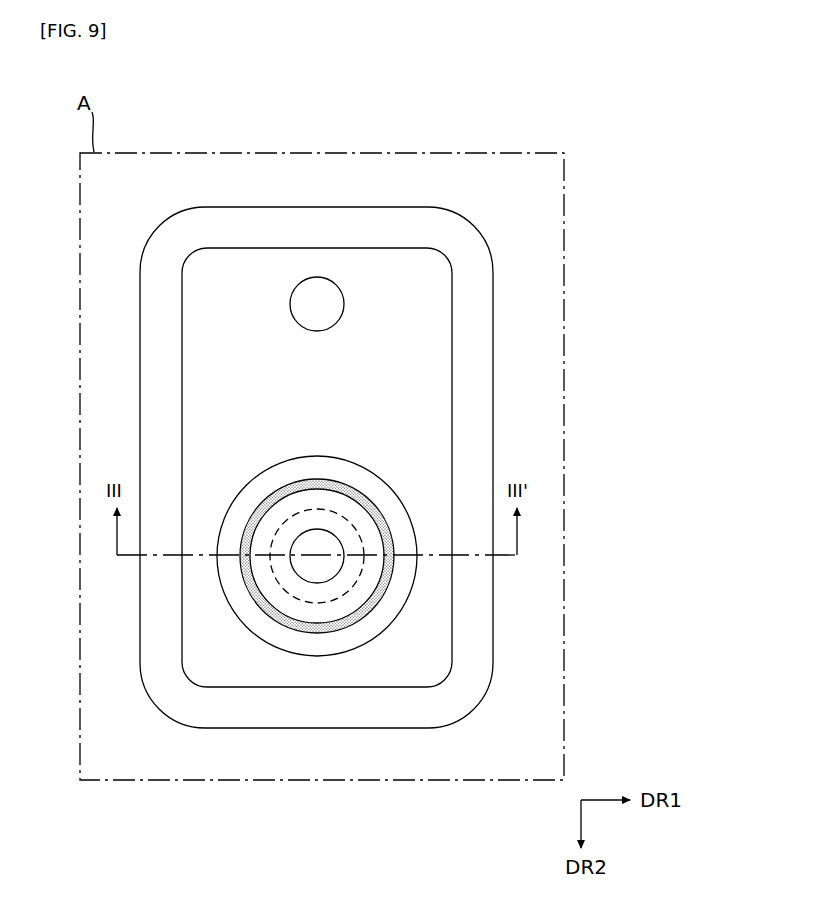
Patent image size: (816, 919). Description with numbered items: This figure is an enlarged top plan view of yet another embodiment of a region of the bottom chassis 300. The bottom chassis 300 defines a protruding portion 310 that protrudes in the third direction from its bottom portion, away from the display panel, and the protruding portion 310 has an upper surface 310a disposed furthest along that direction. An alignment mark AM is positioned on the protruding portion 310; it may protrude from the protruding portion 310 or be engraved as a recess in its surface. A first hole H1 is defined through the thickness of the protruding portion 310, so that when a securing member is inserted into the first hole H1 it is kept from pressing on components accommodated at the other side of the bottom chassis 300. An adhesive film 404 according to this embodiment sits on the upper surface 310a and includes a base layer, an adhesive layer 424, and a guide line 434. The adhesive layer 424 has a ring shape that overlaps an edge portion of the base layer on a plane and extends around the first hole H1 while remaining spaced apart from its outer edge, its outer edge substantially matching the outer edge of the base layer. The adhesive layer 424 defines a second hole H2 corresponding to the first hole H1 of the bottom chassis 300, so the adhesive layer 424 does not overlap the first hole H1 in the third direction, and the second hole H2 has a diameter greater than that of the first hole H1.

The bottom chassis 300 is at (540, 185).
The protruding portion 310 is at (493, 283).
The upper surface 310a is at (452, 341).
The alignment mark AM is at (315, 277).
The adhesive film 404 is at (347, 653).
The guide line 434 is at (392, 565).
The adhesive layer 424 is at (283, 599).
The second hole H2 is at (307, 600).
The first hole H1 is at (343, 567).